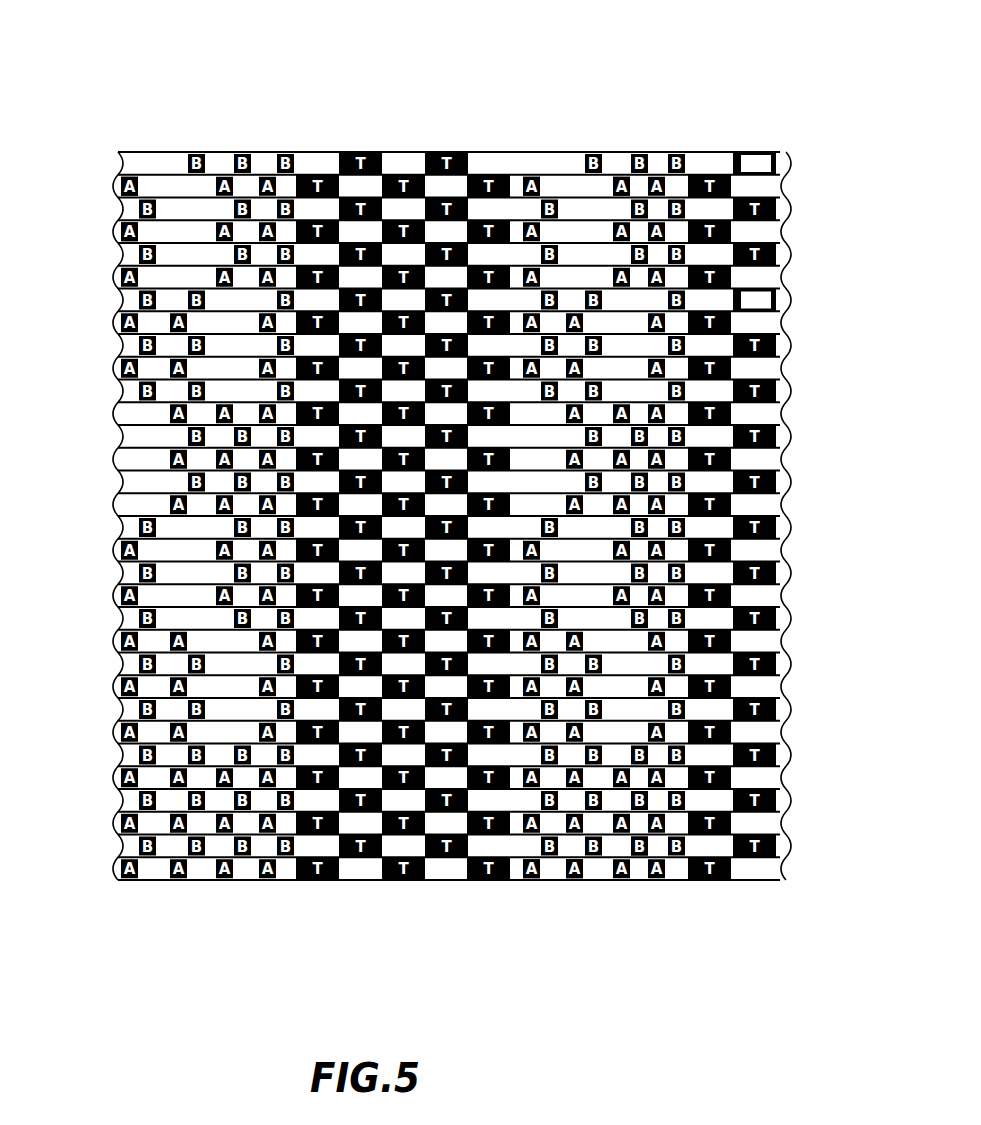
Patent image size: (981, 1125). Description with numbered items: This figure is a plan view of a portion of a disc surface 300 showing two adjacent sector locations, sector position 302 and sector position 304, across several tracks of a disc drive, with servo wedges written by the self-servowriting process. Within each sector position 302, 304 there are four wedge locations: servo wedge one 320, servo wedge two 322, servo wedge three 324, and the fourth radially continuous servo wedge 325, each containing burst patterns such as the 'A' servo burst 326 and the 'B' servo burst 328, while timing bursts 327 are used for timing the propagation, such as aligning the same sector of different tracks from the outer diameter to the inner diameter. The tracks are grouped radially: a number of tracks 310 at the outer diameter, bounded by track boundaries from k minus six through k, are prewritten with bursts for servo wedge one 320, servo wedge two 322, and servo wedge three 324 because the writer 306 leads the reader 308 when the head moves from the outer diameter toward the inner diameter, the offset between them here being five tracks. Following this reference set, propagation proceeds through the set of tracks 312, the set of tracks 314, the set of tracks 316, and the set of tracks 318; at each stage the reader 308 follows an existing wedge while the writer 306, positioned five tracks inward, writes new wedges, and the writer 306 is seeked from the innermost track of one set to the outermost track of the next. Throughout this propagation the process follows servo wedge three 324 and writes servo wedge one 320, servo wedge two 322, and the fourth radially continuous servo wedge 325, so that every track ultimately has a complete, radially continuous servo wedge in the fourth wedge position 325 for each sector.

The disc surface 300 is at (133, 51).
The sector position 302 is at (292, 888).
The sector position 304 is at (683, 892).
The writer 306 is at (747, 155).
The reader 308 is at (774, 297).
The tracks 310 is at (66, 744).
The set of tracks 312 is at (66, 630).
The set of tracks 314 is at (66, 516).
The set of tracks 316 is at (66, 402).
The set of tracks 318 is at (66, 288).
The servo wedge one 320 is at (118, 883).
The servo wedge two 322 is at (163, 883).
The servo wedge three 324 is at (248, 883).
The fourth radially continuous servo wedge 325 is at (293, 883).
The 'A' servo burst 326 is at (140, 233).
The timing bursts 327 is at (380, 887).
The 'B' servo burst 328 is at (239, 153).